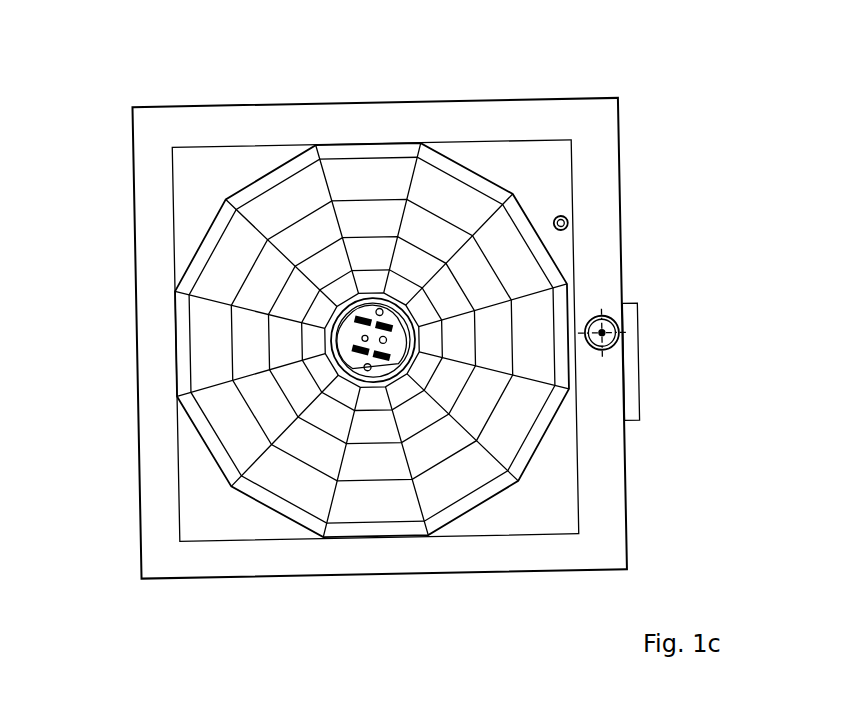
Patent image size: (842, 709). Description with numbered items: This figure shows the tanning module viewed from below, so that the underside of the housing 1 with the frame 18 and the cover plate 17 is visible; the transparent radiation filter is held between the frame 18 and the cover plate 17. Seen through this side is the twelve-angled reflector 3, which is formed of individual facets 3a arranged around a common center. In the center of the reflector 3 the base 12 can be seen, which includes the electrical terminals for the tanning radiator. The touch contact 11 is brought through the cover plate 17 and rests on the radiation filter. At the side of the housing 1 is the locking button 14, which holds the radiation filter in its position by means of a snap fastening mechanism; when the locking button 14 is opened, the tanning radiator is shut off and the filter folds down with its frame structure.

The housing 1 is at (371, 103).
The cover plate 17 is at (540, 167).
The reflector 3 is at (394, 339).
The facets 3a is at (232, 268).
The base 12 is at (350, 335).
The touch contact 11 is at (569, 223).
The locking button 14 is at (607, 332).
The frame 18 is at (603, 448).